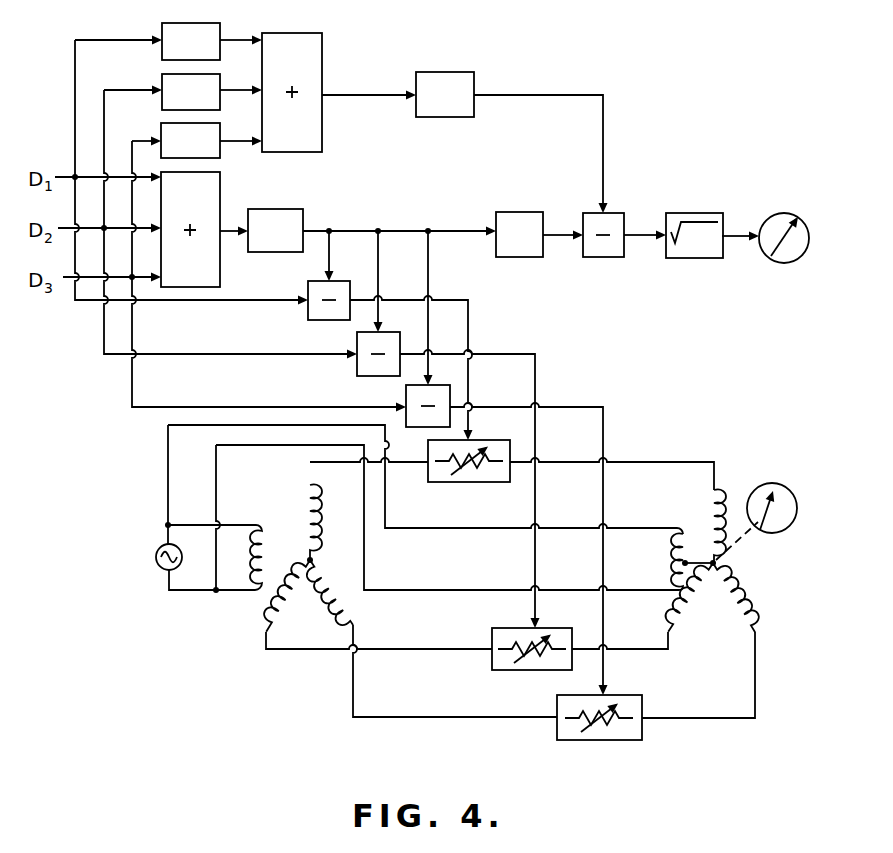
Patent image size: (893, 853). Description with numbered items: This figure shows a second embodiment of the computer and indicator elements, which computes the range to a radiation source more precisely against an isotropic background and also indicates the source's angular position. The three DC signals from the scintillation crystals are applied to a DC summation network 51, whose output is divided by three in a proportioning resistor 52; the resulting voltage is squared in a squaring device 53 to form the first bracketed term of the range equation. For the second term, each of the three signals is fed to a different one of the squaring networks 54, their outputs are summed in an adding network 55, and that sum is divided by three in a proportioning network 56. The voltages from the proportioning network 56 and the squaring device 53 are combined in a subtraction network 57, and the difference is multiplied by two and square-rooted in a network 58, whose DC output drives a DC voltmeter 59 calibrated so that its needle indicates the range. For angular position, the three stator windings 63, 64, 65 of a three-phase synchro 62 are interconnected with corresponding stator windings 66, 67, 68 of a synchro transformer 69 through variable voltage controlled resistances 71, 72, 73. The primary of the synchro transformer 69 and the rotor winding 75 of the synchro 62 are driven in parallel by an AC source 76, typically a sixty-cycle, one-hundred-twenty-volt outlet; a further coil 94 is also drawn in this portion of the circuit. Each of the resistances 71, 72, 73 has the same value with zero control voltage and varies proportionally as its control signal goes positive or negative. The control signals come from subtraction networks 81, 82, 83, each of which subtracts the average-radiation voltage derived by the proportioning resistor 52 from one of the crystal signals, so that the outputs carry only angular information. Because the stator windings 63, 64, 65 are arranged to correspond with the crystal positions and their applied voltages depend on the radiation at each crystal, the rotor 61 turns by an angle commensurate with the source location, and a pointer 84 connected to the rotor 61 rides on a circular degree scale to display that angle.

The DC summation network 51 is at (214, 269).
The proportioning resistor 52 is at (303, 211).
The squaring device 53 is at (523, 213).
The squaring networks 54 is at (162, 27).
The adding network 55 is at (320, 132).
The proportioning network 56 is at (468, 107).
The subtraction network 57 is at (610, 257).
The square-root network 58 is at (712, 258).
The DC voltmeter 59 is at (802, 254).
The rotor 61 is at (728, 552).
The three-phase synchro 62 is at (731, 538).
The stator winding 63 is at (712, 500).
The stator winding 64 is at (690, 626).
The stator winding 65 is at (752, 611).
The stator winding 66 is at (310, 498).
The stator winding 67 is at (297, 577).
The stator winding 68 is at (355, 614).
The synchro transformer 69 is at (319, 551).
The variable voltage controlled resistance 71 is at (482, 445).
The variable voltage controlled resistance 72 is at (510, 632).
The variable voltage controlled resistance 73 is at (643, 698).
The rotor winding 75 is at (682, 530).
The AC source 76 is at (155, 556).
The subtraction network 81 is at (312, 312).
The subtraction network 82 is at (359, 367).
The subtraction network 83 is at (407, 393).
The pointer 84 is at (785, 500).
The coil 94 is at (244, 594).